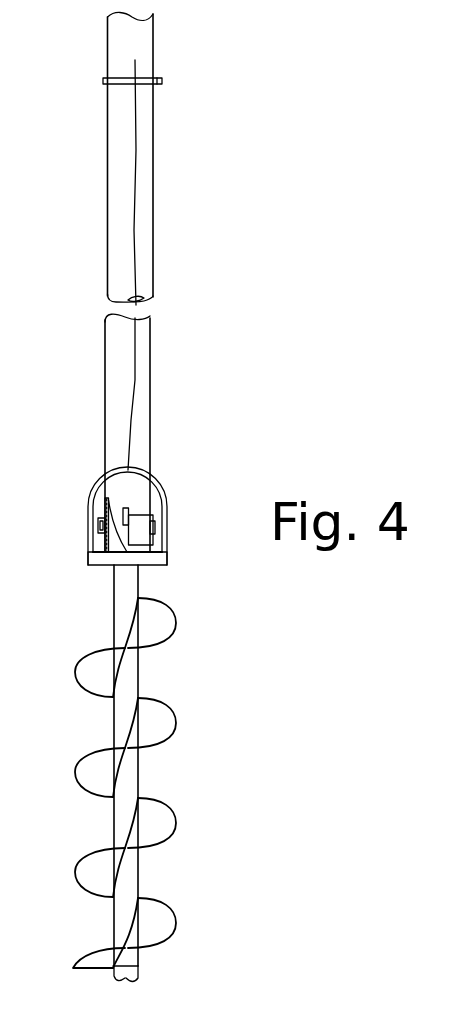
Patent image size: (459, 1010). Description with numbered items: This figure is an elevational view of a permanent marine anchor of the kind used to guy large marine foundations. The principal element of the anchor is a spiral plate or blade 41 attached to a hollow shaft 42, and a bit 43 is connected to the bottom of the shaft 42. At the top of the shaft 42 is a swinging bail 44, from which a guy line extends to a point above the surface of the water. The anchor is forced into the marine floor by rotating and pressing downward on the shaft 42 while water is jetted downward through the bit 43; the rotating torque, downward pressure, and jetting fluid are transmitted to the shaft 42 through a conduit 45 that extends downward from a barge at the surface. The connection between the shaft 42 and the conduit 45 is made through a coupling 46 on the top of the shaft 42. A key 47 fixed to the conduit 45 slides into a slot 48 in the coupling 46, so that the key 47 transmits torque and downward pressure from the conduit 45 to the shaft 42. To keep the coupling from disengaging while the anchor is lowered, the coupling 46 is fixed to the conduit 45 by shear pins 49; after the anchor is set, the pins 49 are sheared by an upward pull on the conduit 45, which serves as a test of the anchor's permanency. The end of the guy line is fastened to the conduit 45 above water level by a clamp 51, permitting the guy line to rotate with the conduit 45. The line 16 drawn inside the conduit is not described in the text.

The cable 16 is at (135, 402).
The spiral plate or blade 41 is at (160, 624).
The hollow shaft 42 is at (130, 677).
The bit 43 is at (131, 968).
The swinging bail 44 is at (90, 497).
The conduit 45 is at (143, 344).
The coupling 46 is at (98, 543).
The key 47 is at (128, 512).
The slot 48 is at (128, 526).
The shear pins 49 is at (96, 527).
The clamp 51 is at (160, 79).